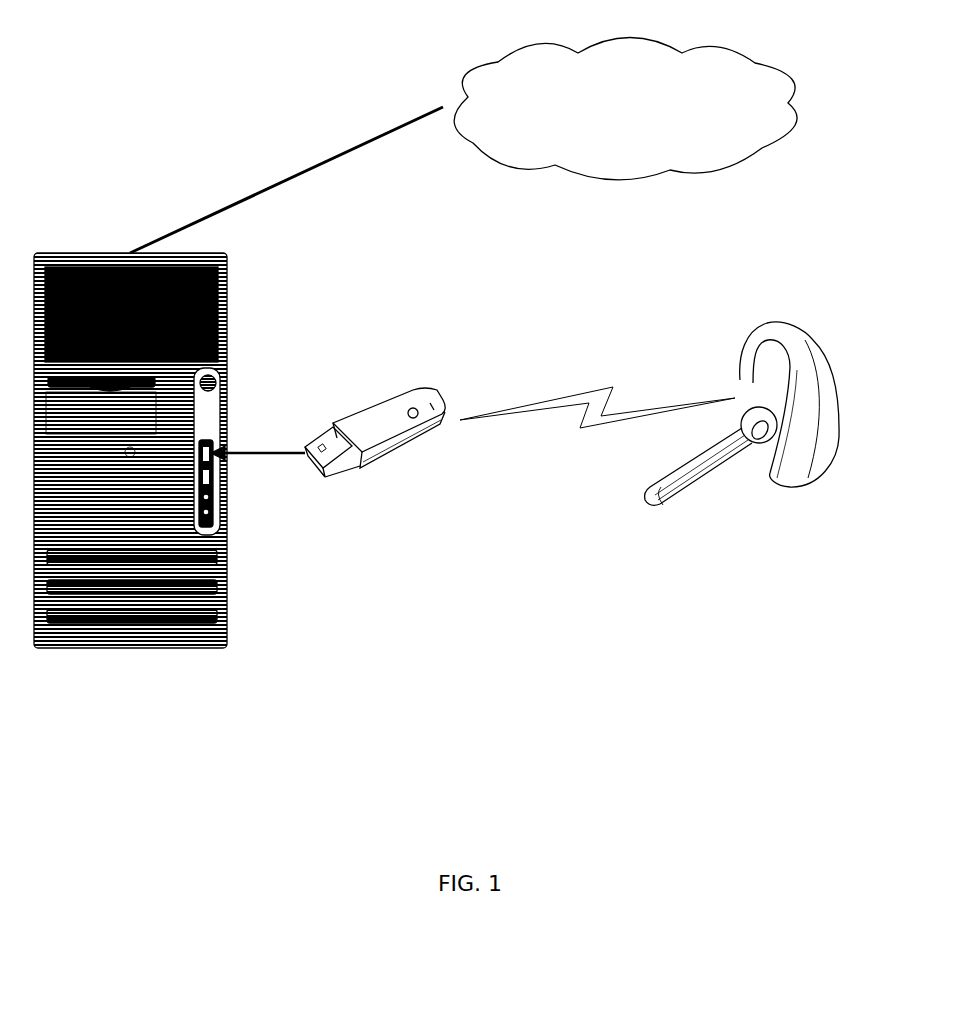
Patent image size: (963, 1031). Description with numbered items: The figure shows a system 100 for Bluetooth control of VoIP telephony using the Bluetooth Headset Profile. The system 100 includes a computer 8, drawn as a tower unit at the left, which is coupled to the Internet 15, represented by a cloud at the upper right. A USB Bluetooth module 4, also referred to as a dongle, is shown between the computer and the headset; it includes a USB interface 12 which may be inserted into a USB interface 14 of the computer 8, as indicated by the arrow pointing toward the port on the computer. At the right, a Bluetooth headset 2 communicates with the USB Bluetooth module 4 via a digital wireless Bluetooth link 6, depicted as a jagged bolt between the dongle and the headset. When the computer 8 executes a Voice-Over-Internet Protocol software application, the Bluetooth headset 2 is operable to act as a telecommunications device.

The system 100 is at (265, 37).
The Internet 15 is at (463, 146).
The computer 8 is at (245, 320).
The USB interface 14 is at (210, 444).
The USB Bluetooth module 4 is at (402, 463).
The USB interface 12 is at (332, 455).
The Bluetooth link 6 is at (597, 445).
The Bluetooth headset 2 is at (818, 455).